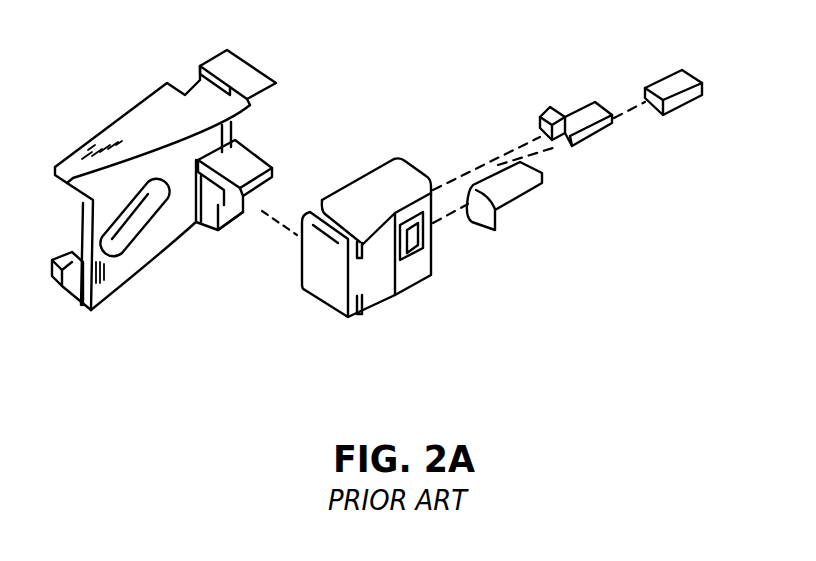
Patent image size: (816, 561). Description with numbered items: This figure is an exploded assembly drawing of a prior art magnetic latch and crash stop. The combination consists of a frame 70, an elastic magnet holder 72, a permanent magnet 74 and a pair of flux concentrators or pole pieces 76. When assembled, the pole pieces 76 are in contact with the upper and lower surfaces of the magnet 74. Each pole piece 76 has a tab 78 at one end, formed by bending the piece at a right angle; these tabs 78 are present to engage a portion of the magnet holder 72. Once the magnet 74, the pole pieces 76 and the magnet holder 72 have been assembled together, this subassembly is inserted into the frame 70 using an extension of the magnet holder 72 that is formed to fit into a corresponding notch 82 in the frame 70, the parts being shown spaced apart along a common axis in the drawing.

The frame 70 is at (250, 165).
The elastic magnet holder 72 is at (398, 159).
The permanent magnet 74 is at (672, 73).
The pole pieces 76 is at (493, 160).
The tab 78 is at (562, 137).
The notch 82 is at (201, 222).